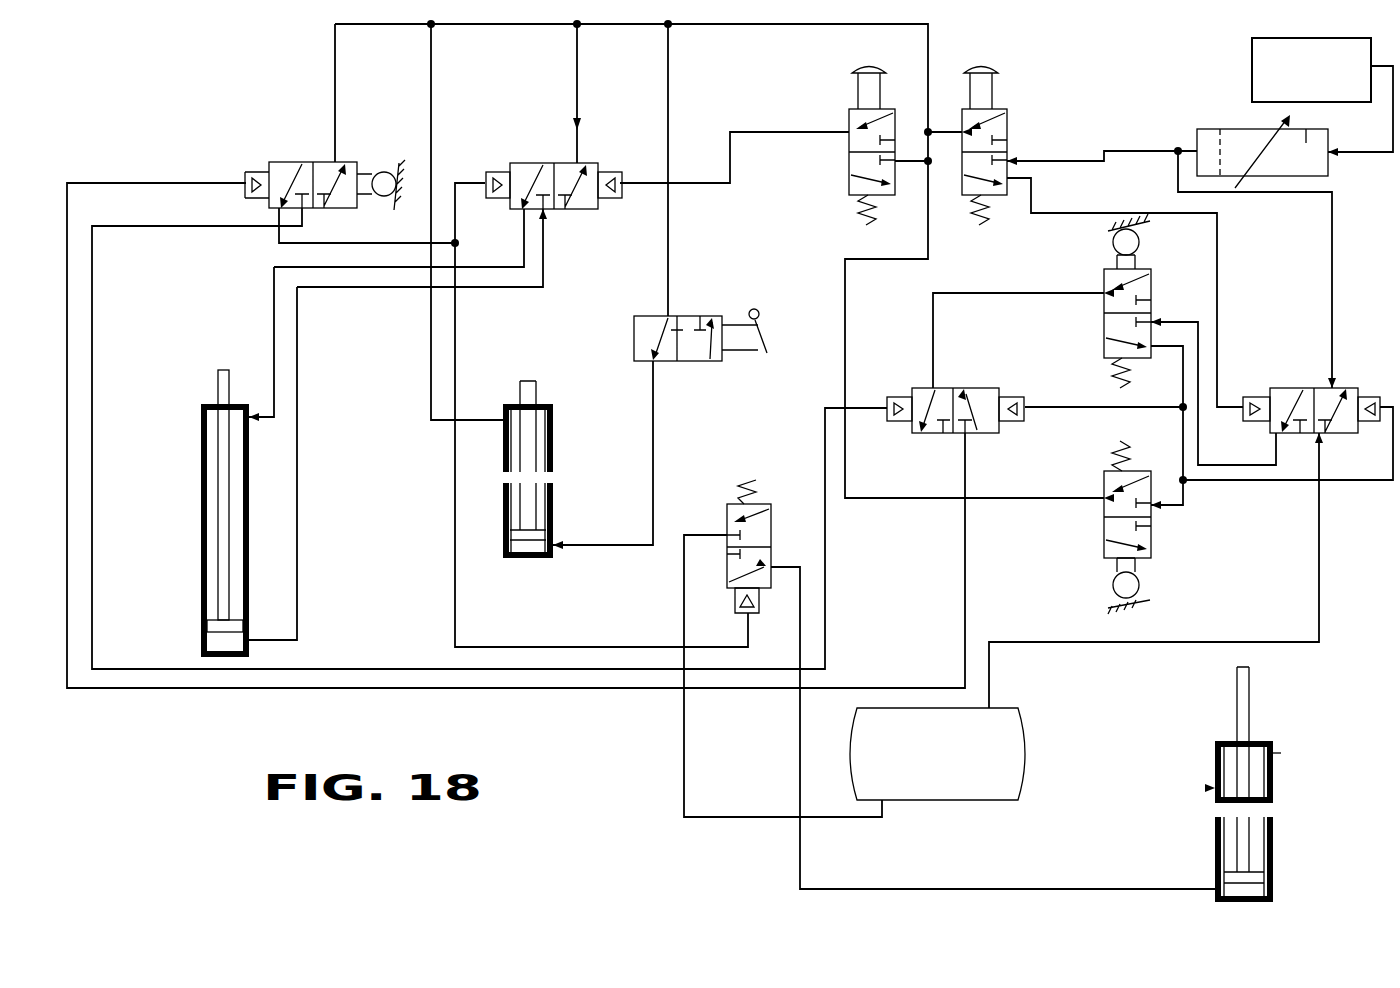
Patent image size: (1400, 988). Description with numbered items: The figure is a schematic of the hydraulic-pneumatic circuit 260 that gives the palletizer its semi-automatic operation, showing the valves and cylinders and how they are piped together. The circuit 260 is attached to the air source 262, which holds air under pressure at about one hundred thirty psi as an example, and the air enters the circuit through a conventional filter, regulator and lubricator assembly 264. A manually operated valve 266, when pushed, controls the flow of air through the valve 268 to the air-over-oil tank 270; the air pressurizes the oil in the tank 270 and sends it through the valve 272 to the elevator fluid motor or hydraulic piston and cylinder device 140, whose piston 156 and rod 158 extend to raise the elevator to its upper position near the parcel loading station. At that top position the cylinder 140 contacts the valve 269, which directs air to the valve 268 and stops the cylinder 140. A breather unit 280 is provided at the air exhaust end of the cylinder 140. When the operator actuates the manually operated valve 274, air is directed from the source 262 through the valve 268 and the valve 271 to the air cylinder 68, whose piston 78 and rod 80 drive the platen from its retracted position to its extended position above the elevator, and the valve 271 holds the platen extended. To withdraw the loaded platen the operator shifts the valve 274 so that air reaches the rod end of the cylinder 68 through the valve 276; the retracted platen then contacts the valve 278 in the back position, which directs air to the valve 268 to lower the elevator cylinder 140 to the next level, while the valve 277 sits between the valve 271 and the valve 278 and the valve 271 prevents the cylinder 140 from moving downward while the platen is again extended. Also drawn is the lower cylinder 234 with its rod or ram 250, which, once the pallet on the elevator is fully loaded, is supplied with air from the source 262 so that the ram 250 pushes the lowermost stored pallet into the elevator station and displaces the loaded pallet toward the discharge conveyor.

The air cylinder 68 is at (198, 510).
The piston 78 is at (206, 626).
The rod 80 is at (218, 383).
The hydraulic piston and cylinder device 140 is at (1210, 733).
The piston 156 is at (1258, 870).
The rod 158 is at (1237, 707).
The cylinder 234 is at (553, 510).
The rod 250 is at (538, 389).
The hydraulic-pneumatic circuit 260 is at (615, 705).
The air source 262 is at (1252, 72).
The filter, regulator and lubricator assembly 264 is at (1243, 129).
The manually operated valve 266 is at (1007, 121).
The valve 268 is at (1300, 388).
The valve 269 is at (1104, 545).
The air-over-oil tank 270 is at (1018, 760).
The valve 271 is at (1151, 293).
The valve 272 is at (770, 502).
The manually operated valve 274 is at (849, 119).
The valve 276 is at (542, 163).
The valve 277 is at (964, 388).
The valve 278 is at (303, 162).
The breather unit 280 is at (705, 361).